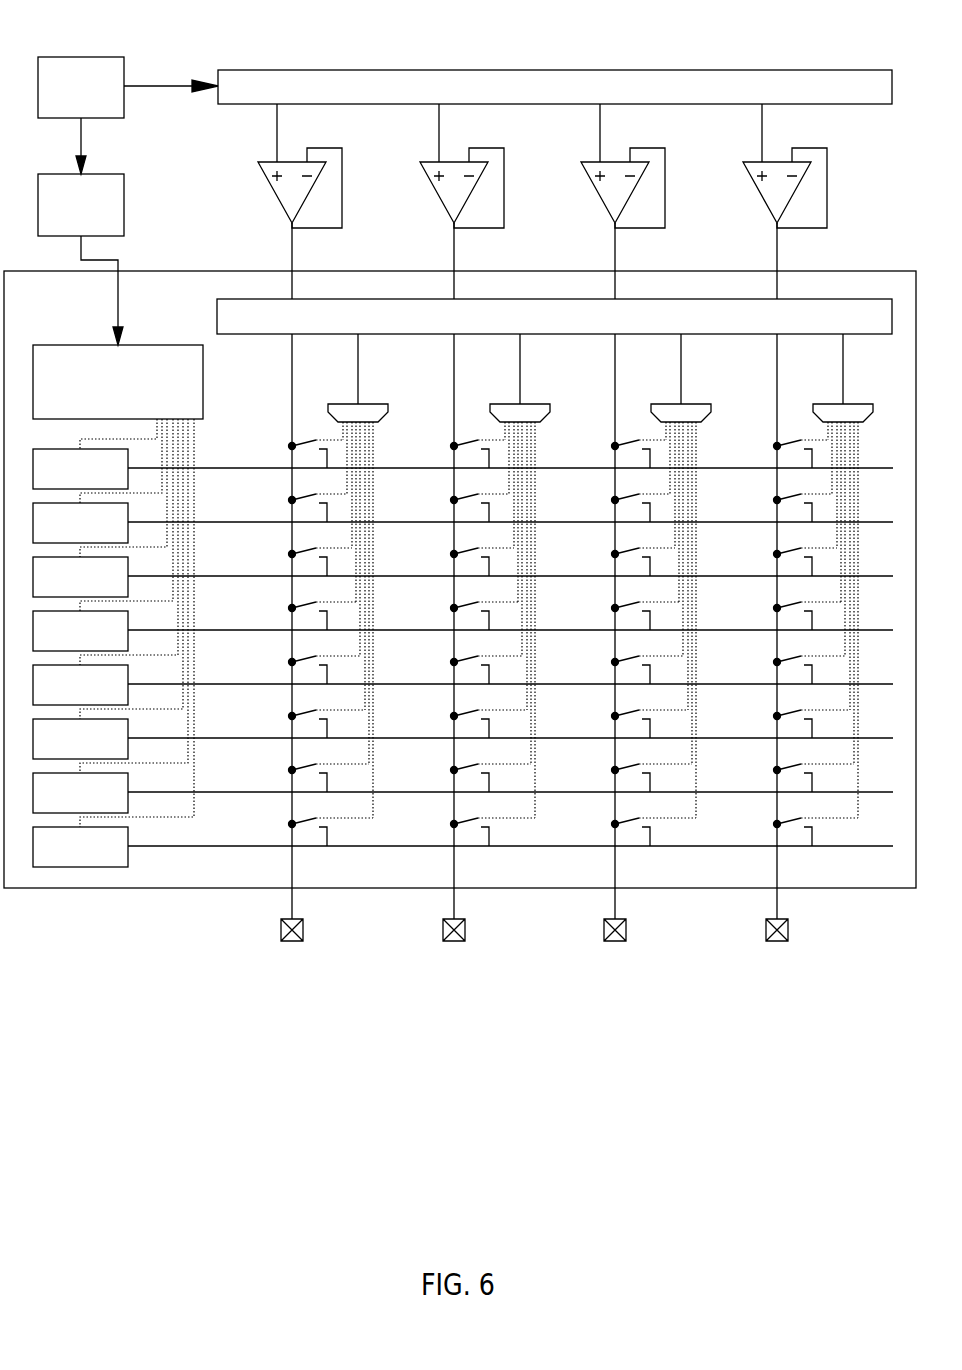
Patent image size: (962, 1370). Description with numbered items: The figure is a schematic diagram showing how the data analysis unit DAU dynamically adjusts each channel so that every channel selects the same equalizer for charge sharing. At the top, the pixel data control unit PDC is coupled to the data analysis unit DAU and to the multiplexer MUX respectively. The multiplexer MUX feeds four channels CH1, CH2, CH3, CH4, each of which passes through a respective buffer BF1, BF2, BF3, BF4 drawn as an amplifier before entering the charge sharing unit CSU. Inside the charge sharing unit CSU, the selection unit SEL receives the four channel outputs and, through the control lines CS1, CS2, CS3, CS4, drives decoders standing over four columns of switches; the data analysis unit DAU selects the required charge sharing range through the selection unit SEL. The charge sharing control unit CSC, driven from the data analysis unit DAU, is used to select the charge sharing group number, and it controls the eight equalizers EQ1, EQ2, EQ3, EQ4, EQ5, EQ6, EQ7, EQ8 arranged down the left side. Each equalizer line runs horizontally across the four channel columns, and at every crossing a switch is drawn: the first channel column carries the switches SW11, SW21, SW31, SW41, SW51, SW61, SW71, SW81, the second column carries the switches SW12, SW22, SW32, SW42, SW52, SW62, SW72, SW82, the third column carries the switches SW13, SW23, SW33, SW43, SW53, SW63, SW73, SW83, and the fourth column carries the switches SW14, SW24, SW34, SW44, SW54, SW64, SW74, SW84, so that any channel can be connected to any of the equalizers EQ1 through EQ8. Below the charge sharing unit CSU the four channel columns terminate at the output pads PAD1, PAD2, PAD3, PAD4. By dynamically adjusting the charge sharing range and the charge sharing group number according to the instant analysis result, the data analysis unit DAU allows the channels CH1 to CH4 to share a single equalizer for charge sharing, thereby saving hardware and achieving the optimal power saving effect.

The pixel data control unit PDC is at (110, 102).
The data analysis unit DAU is at (112, 217).
The multiplexer MUX is at (549, 101).
The charge sharing unit CSU is at (67, 307).
The charge sharing control unit CSC is at (145, 397).
The selection unit SEL is at (537, 330).
The equalizer EQ1 is at (108, 486).
The equalizer EQ2 is at (108, 540).
The equalizer EQ3 is at (108, 594).
The equalizer EQ4 is at (108, 648).
The equalizer EQ5 is at (108, 702).
The equalizer EQ6 is at (108, 756).
The equalizer EQ7 is at (108, 810).
The equalizer EQ8 is at (108, 864).
The channel CH1 is at (247, 133).
The channel CH2 is at (409, 133).
The channel CH3 is at (570, 133).
The channel CH4 is at (732, 133).
The buffer 1 BF1 is at (285, 533).
The buffer 2 BF2 is at (447, 533).
The buffer 3 BF3 is at (608, 533).
The buffer 4 BF4 is at (770, 533).
The control signal decoder 1 CS1 is at (347, 576).
The control signal decoder 2 CS2 is at (509, 576).
The control signal decoder 3 CS3 is at (670, 576).
The control signal decoder 4 CS4 is at (832, 576).
The switch SW11 is at (280, 447).
The switch SW12 is at (442, 447).
The switch SW13 is at (603, 447).
The switch SW14 is at (765, 447).
The switch SW21 is at (282, 501).
The switch SW22 is at (444, 501).
The switch SW23 is at (605, 501).
The switch SW24 is at (767, 501).
The switch SW31 is at (284, 555).
The switch SW32 is at (446, 555).
The switch SW33 is at (607, 555).
The switch SW34 is at (769, 555).
The switch SW41 is at (286, 609).
The switch SW42 is at (448, 609).
The switch SW43 is at (609, 609).
The switch SW44 is at (771, 609).
The switch SW51 is at (288, 663).
The switch SW52 is at (450, 663).
The switch SW53 is at (611, 663).
The switch SW54 is at (773, 663).
The switch SW61 is at (291, 717).
The switch SW62 is at (453, 717).
The switch SW63 is at (614, 717).
The switch SW64 is at (776, 717).
The switch SW71 is at (293, 771).
The switch SW72 is at (455, 771).
The switch SW73 is at (616, 771).
The switch SW74 is at (778, 771).
The switch SW81 is at (295, 825).
The switch SW82 is at (457, 825).
The switch SW83 is at (618, 825).
The switch SW84 is at (780, 825).
The pad 1 PAD1 is at (291, 948).
The pad 2 PAD2 is at (453, 948).
The pad 3 PAD3 is at (614, 948).
The pad 4 PAD4 is at (776, 948).